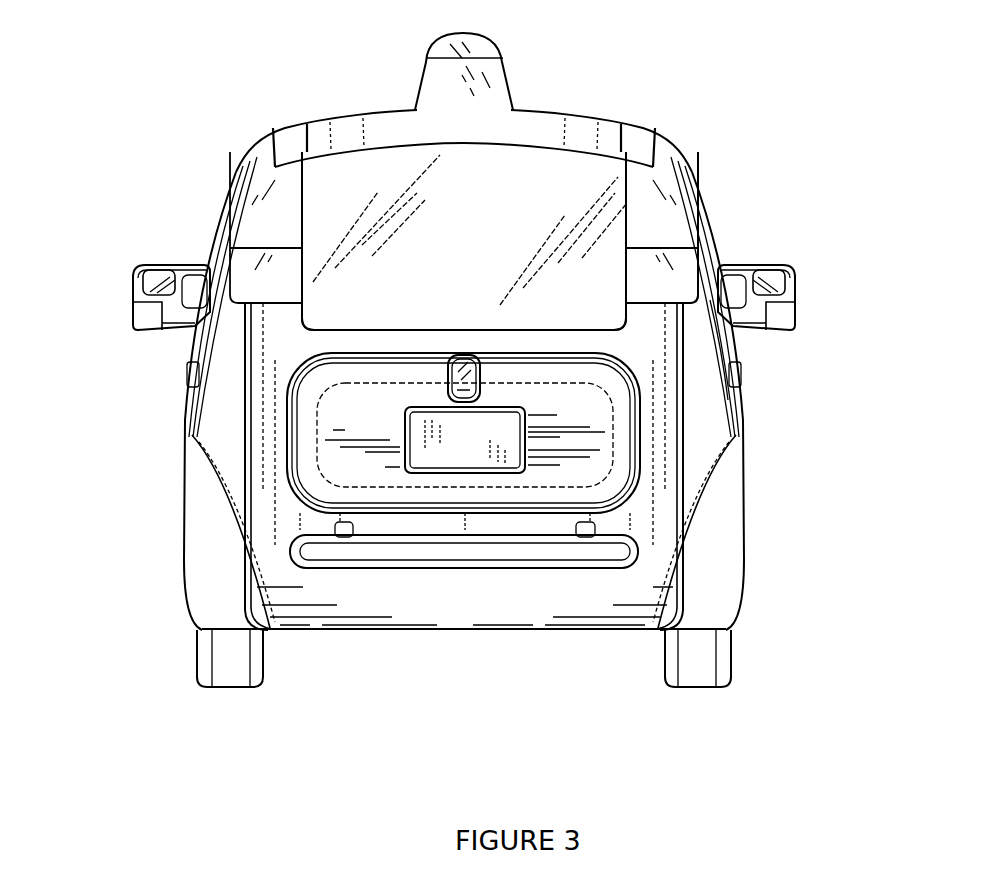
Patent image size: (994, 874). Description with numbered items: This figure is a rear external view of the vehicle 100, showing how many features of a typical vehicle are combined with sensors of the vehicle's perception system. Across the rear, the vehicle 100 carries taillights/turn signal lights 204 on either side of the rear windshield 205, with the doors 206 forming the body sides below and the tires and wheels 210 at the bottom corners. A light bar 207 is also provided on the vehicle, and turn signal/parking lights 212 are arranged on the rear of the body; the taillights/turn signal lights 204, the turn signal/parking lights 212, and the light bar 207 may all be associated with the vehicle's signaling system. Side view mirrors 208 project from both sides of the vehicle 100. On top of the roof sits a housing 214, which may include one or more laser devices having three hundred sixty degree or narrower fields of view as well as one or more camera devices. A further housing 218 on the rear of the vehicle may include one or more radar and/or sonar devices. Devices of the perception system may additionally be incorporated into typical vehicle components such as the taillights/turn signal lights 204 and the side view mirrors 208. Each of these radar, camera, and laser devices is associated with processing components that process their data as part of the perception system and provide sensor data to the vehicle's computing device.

The vehicle 100 is at (525, 417).
The taillights/turn signal lights 204 is at (667, 215).
The rear windshield 205 is at (602, 256).
The doors 206 is at (722, 353).
The light bar 207 is at (737, 382).
The side view mirrors 208 is at (138, 300).
The tires and wheels 210 is at (732, 670).
The turn signal/parking lights 212 is at (615, 557).
The housing 214 is at (427, 58).
The housing 218 is at (477, 400).